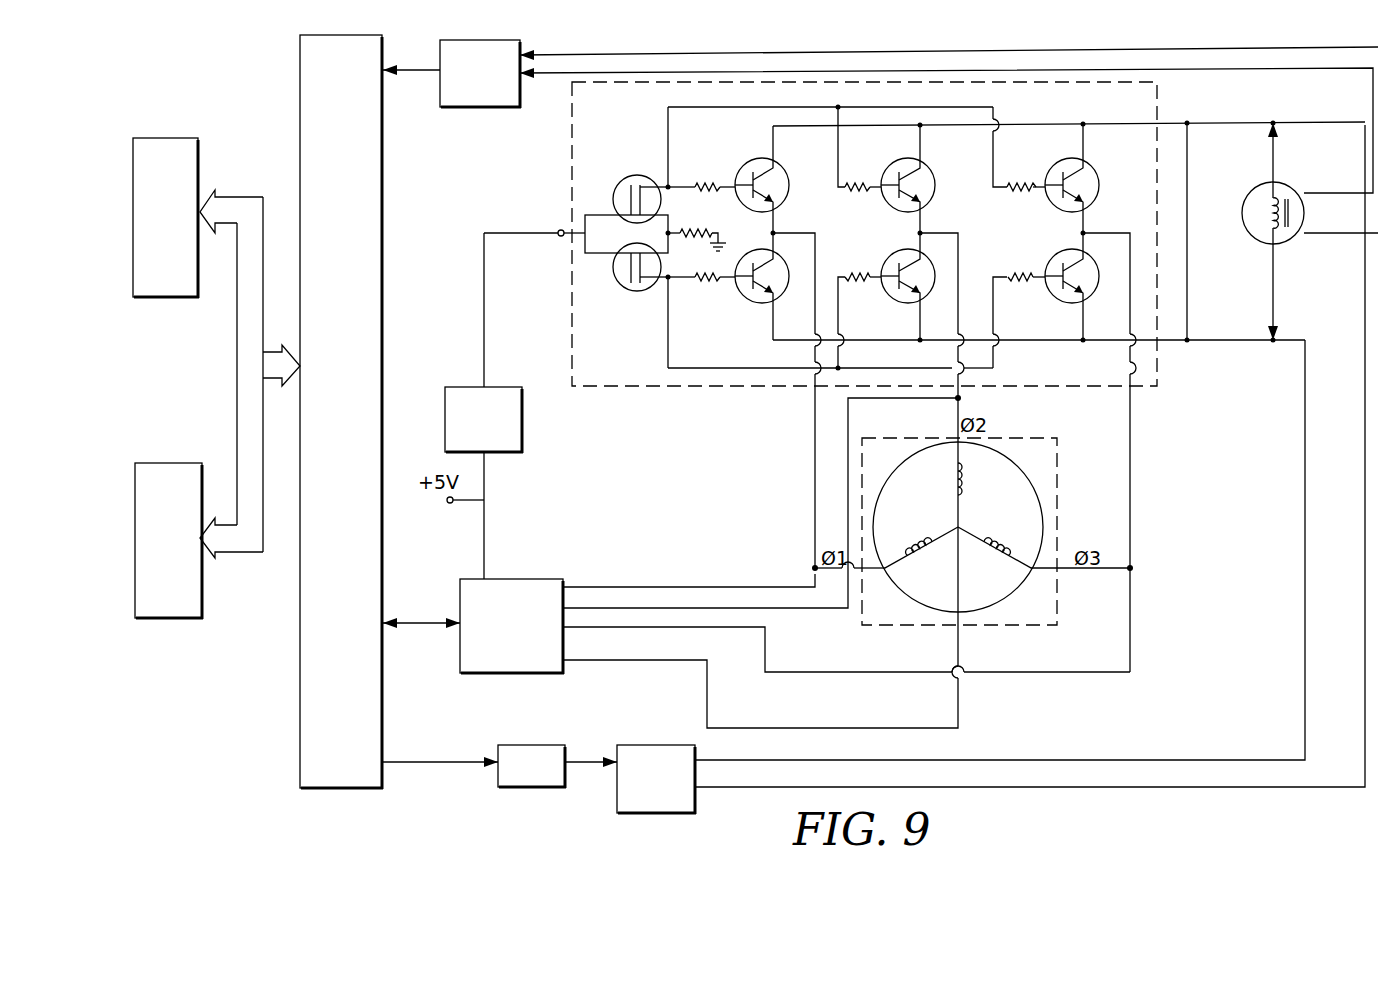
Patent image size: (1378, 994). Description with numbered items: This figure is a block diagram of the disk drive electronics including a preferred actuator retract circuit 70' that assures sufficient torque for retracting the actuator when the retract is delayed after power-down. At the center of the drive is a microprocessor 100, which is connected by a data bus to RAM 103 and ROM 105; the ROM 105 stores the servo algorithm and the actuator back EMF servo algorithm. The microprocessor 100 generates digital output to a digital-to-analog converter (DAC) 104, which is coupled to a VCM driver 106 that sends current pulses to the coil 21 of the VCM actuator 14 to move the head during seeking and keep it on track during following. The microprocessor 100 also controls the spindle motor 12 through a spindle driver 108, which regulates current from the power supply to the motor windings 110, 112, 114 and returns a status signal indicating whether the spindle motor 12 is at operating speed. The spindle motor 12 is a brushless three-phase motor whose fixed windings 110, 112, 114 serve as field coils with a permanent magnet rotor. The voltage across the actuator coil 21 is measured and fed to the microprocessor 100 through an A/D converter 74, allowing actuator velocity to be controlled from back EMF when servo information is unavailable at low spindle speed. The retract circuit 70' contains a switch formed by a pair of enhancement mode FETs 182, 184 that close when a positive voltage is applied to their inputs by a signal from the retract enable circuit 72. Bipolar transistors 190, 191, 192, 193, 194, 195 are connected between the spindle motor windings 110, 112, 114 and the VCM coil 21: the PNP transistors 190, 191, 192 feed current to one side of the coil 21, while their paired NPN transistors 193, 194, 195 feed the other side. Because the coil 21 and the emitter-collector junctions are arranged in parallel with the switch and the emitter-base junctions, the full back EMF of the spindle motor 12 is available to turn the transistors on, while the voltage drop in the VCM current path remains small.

The microprocessor 100 is at (300, 775).
The RAM 103 is at (163, 463).
The ROM 105 is at (162, 138).
The A/D converter 74 is at (480, 108).
The retract enable circuit 72 is at (523, 437).
The spindle driver 108 is at (544, 578).
The digital-to-analog converter (DAC) 104 is at (534, 744).
The VCM driver 106 is at (646, 745).
The retract circuit 70' is at (964, 377).
The enhancement mode FET 182 is at (637, 176).
The enhancement mode FET 184 is at (637, 291).
The PNP transistor 190 is at (756, 164).
The PNP transistor 191 is at (907, 162).
The PNP transistor 192 is at (1060, 162).
The NPN transistor 193 is at (757, 303).
The NPN transistor 194 is at (906, 304).
The NPN transistor 195 is at (1070, 304).
The VCM actuator 14 is at (1288, 231).
The coil 21 is at (1256, 216).
The spindle motor 12 is at (1022, 551).
The winding 110 is at (928, 556).
The winding 112 is at (962, 478).
The winding 114 is at (1005, 543).